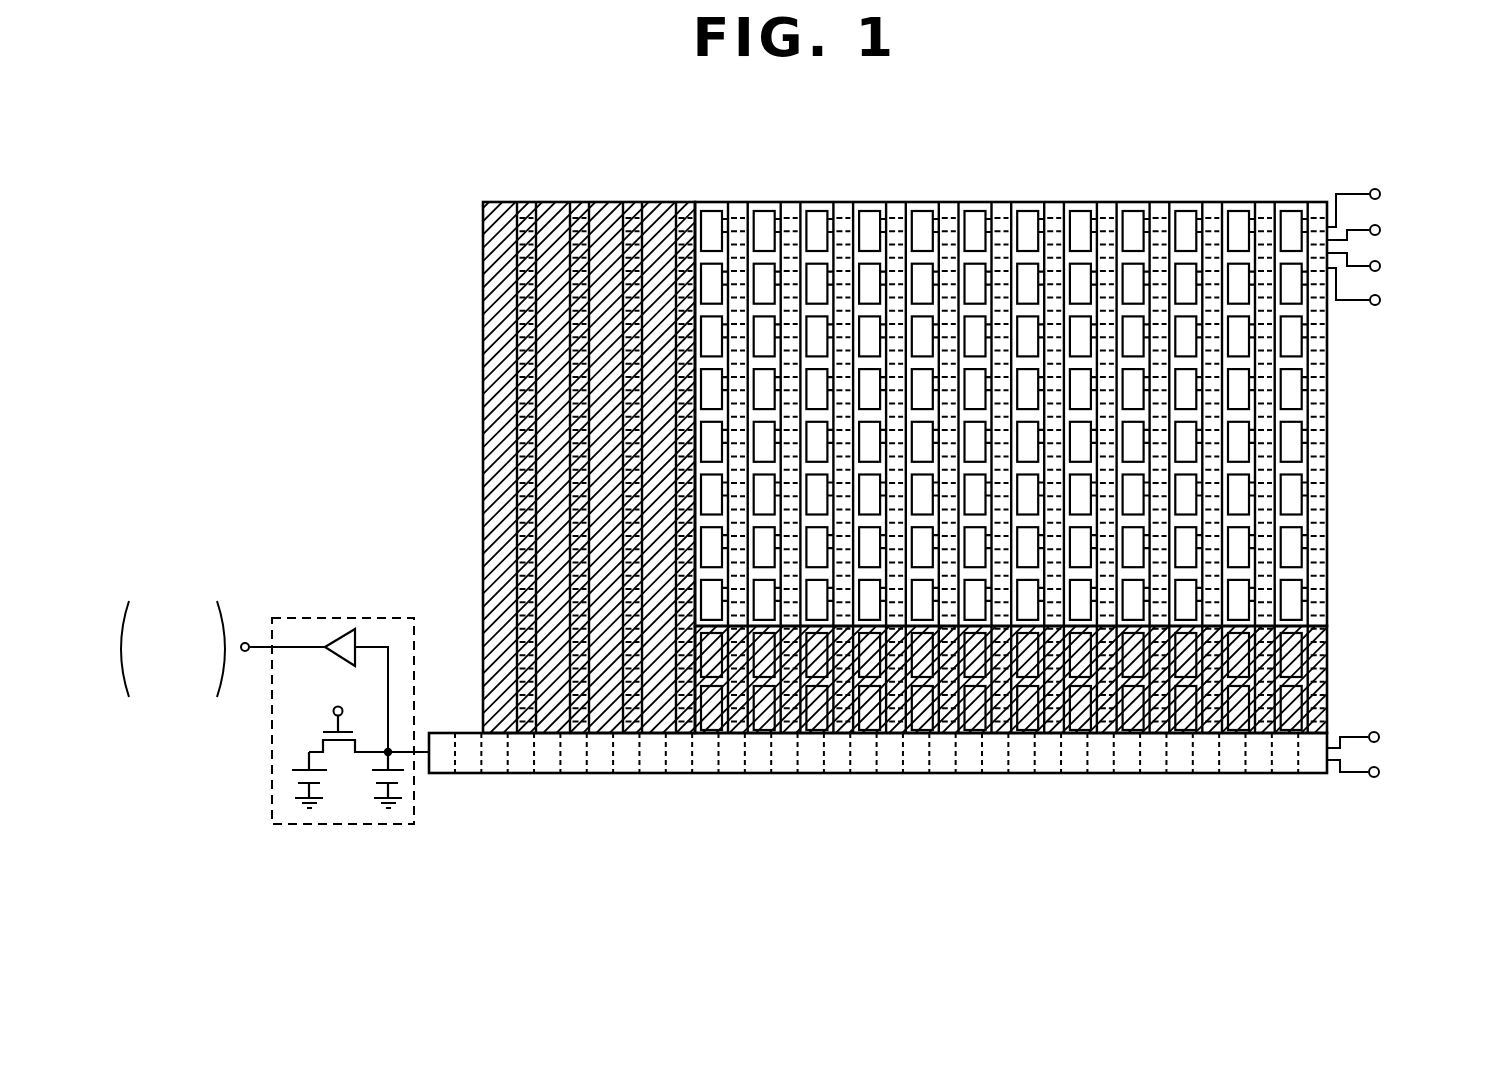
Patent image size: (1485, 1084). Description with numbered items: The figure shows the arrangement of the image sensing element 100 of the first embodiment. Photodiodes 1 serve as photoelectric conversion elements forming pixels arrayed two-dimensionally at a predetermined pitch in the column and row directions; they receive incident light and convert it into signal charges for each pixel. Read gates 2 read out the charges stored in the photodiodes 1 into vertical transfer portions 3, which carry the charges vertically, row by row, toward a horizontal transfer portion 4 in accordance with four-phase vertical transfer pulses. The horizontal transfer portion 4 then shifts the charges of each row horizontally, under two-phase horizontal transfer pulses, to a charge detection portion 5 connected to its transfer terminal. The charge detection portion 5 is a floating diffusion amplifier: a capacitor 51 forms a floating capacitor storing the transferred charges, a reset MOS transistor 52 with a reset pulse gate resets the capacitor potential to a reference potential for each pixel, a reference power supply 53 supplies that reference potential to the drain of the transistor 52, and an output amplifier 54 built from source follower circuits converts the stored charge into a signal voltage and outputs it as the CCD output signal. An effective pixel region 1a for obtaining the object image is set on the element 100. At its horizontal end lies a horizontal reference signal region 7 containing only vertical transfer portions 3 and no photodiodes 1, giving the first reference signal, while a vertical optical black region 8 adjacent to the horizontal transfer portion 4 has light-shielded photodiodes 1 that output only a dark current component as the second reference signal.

The image sensing element 100 is at (423, 337).
The effective pixel region 1a is at (1130, 195).
The photodiode 1 is at (762, 214).
The read gate 2 is at (776, 222).
The vertical transfer portion 3 is at (790, 210).
The horizontal reference signal region 7 is at (525, 201).
The vertical optical black region 8 is at (1327, 692).
The horizontal transfer portion 4 is at (603, 765).
The charge detection portion 5 is at (343, 826).
The capacitor 51 is at (400, 777).
The reset MOS transistor 52 is at (323, 732).
The reference power supply 53 is at (292, 775).
The output amplifier 54 is at (338, 630).